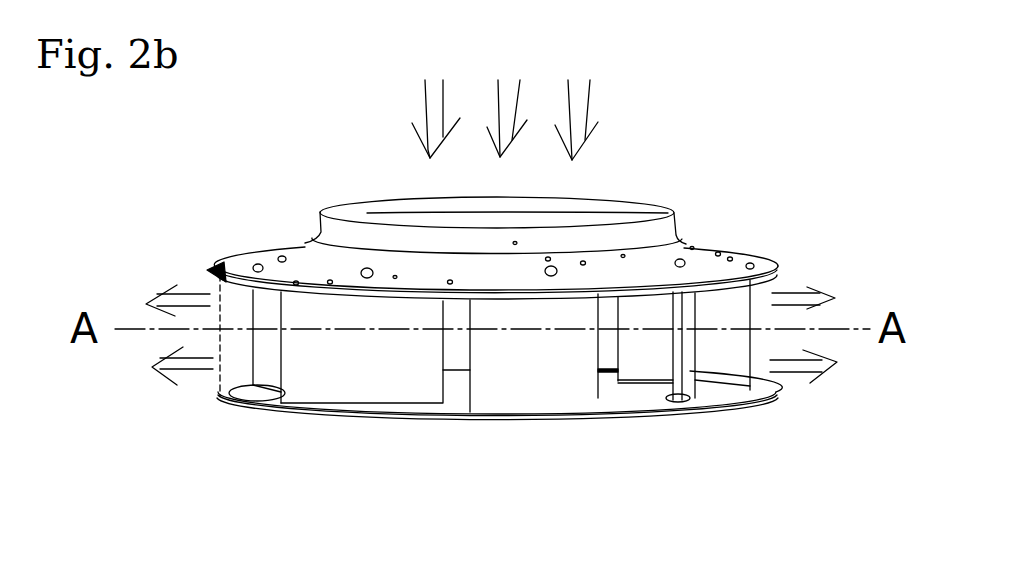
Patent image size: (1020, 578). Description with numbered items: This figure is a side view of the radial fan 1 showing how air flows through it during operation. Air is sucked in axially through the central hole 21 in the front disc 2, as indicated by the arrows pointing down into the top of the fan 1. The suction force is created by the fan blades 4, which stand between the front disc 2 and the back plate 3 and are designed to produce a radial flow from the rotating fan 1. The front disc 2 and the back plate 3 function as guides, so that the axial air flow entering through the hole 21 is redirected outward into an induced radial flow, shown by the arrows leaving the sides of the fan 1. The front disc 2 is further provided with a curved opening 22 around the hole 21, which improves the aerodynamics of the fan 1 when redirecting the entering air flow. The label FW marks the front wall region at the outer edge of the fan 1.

The fan 1 is at (690, 104).
The front disc 2 is at (727, 250).
The central hole 21 is at (417, 217).
The curved opening 22 is at (688, 232).
The back plate 3 is at (627, 397).
The fan blades 4 is at (317, 372).
The front wall FW is at (218, 338).